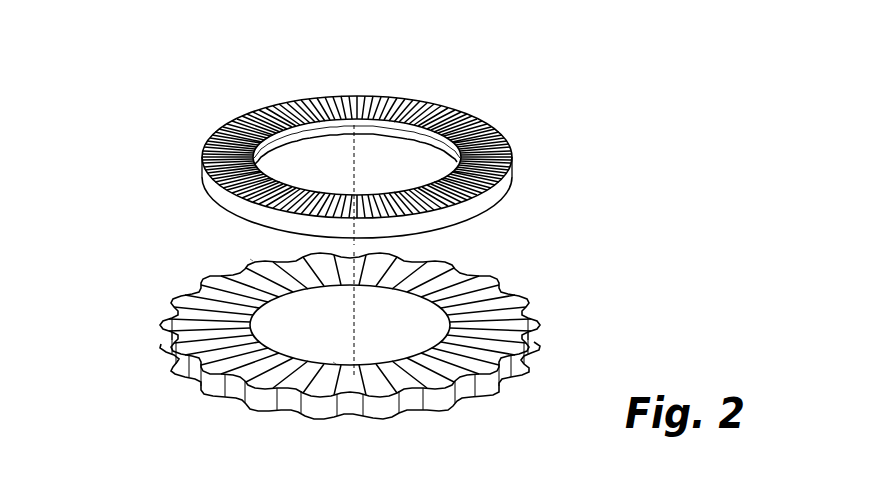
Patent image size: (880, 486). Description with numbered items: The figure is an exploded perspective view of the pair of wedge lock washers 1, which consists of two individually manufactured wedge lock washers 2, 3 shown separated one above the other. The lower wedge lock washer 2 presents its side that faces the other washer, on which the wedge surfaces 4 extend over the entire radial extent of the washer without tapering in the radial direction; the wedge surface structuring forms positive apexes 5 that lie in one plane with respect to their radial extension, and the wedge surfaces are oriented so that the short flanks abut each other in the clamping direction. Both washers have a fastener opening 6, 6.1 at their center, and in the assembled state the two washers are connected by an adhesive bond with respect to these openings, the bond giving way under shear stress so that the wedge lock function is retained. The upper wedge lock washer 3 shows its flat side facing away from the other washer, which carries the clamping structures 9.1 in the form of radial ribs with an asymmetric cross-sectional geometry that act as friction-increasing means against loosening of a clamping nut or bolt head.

The pair of wedge lock washers 1 is at (445, 211).
The wedge lock washer 2 is at (419, 318).
The wedge lock washer 3 is at (383, 120).
The wedge surfaces 4 is at (473, 291).
The apexes 5 is at (333, 362).
The fastener opening 6 is at (366, 344).
The fastener opening 6.1 is at (321, 130).
The clamping structures 9.1 is at (383, 95).